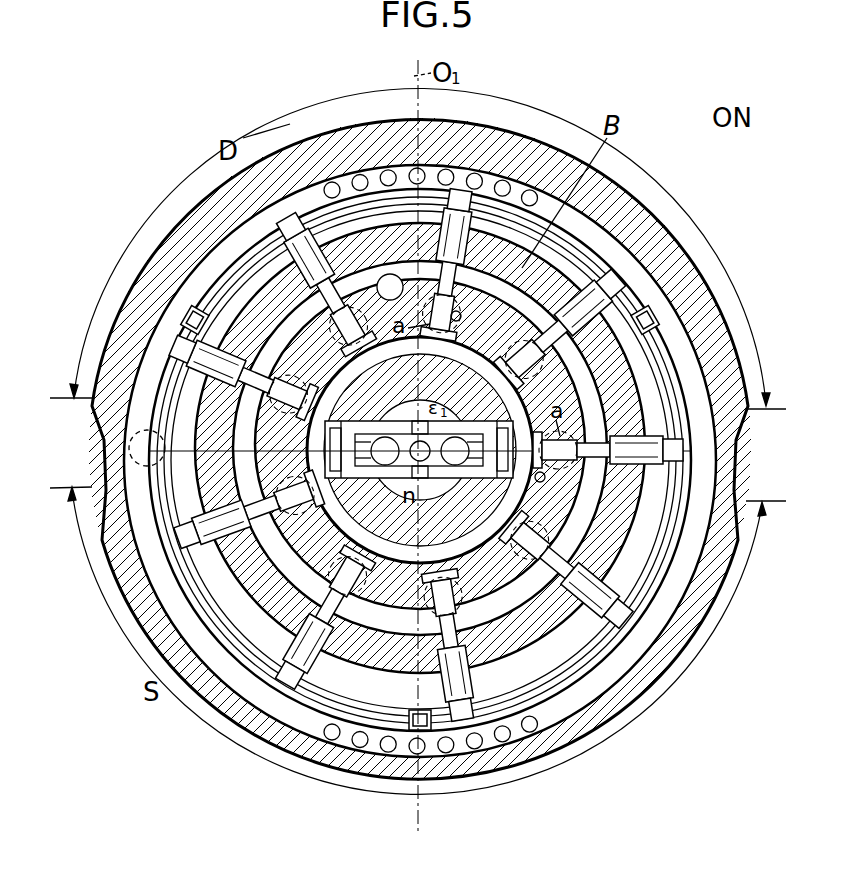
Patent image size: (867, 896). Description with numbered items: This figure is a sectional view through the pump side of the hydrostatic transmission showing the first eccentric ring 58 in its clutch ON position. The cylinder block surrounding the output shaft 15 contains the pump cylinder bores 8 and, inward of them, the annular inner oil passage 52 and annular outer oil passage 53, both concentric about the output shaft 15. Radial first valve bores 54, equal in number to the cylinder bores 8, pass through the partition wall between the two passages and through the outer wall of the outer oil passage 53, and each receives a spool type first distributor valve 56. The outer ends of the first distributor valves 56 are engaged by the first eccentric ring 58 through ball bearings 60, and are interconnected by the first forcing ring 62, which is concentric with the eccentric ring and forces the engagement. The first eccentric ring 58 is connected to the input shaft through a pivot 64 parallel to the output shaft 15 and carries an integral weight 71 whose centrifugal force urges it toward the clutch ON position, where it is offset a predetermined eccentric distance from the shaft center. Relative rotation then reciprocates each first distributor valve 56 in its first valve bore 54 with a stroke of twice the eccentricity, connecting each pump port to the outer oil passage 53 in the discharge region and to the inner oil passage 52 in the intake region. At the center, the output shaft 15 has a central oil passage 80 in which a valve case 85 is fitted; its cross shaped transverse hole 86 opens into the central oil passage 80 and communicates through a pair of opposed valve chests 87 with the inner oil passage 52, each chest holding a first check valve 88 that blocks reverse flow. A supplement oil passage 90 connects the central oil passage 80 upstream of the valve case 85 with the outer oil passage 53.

The cylinder bores 8 is at (458, 318).
The output shaft 15 is at (412, 534).
The annular inner oil passage 52 is at (340, 540).
The annular outer oil passage 53 is at (272, 600).
The first valve bores 54 is at (590, 282).
The first distributor valves 56 is at (456, 210).
The first eccentric ring 58 is at (512, 760).
The ball bearings 60 is at (392, 752).
The first forcing ring 62 is at (264, 692).
The pivot 64 is at (140, 468).
The weight 71 is at (295, 160).
The central oil passage 80 is at (420, 409).
The valve case 85 is at (419, 432).
The cross shaped transverse hole 86 is at (431, 420).
The valve chests 87 is at (415, 453).
The first check valve 88 is at (413, 488).
The supplement oil passage 90 is at (383, 274).